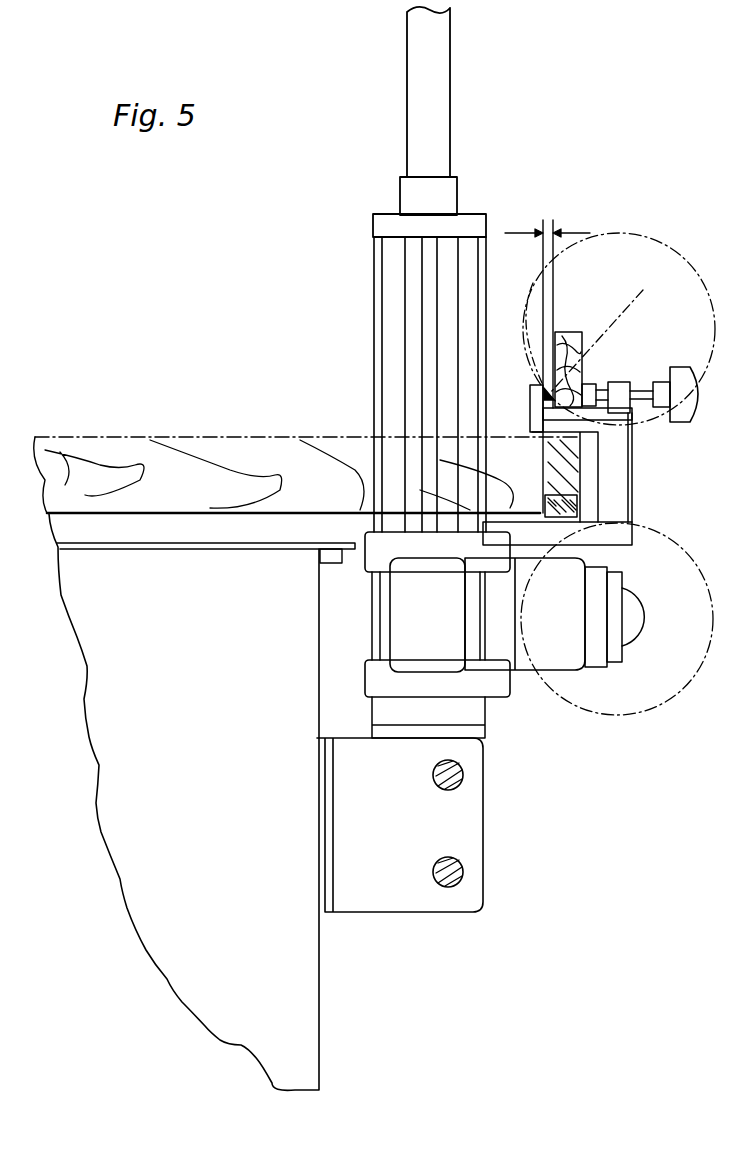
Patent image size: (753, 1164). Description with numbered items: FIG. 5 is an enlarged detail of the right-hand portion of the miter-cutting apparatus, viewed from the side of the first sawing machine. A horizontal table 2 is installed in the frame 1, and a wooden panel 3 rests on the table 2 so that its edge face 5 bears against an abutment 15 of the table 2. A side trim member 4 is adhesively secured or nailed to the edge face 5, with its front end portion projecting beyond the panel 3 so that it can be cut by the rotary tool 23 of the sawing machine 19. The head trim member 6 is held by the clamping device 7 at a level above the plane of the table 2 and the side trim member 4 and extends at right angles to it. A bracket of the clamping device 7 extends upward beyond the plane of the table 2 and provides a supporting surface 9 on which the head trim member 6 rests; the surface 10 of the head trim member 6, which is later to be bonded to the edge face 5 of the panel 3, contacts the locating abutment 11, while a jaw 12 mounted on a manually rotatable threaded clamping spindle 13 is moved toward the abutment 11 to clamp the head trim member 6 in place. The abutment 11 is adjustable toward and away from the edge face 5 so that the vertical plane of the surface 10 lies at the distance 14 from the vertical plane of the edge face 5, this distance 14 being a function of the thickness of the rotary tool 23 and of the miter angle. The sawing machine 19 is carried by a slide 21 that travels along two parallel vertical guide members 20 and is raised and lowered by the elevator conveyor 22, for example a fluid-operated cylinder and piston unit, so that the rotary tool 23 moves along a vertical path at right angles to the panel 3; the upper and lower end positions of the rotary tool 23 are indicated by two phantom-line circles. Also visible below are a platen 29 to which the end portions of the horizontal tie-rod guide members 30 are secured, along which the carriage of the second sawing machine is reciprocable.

The frame 1 is at (274, 941).
The table 2 is at (175, 533).
The panel 3 is at (160, 455).
The side trim member 4 is at (575, 480).
The edge face 5 is at (540, 458).
The head trim member 6 is at (643, 290).
The clamping device 7 is at (516, 350).
The supporting surface 9 is at (583, 412).
The surface of head trim member 10 is at (556, 345).
The abutment 11 is at (530, 393).
The jaw 12 is at (598, 386).
The clamping spindle 13 is at (640, 396).
The distance 14 is at (548, 224).
The abutment 15 is at (575, 512).
The sawing machine 19 is at (632, 633).
The guide member 20 is at (390, 310).
The slide 21 is at (497, 655).
The elevator conveyor 22 is at (441, 89).
The rotary tool 23 is at (643, 232).
The platen 29 is at (380, 897).
The guide member 30 is at (460, 783).